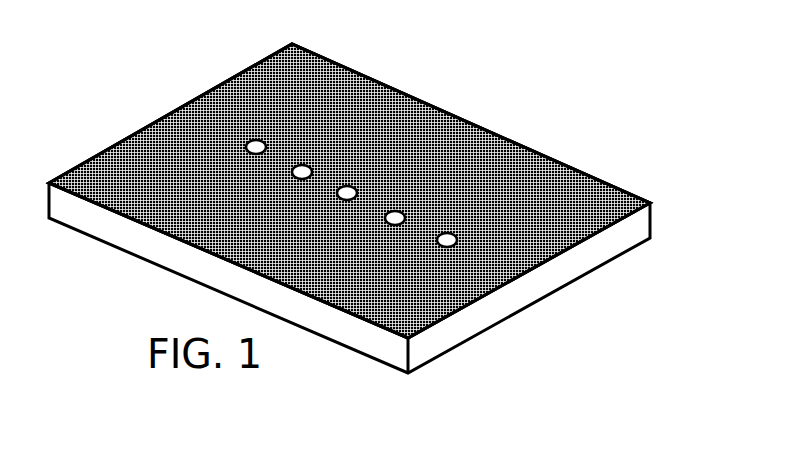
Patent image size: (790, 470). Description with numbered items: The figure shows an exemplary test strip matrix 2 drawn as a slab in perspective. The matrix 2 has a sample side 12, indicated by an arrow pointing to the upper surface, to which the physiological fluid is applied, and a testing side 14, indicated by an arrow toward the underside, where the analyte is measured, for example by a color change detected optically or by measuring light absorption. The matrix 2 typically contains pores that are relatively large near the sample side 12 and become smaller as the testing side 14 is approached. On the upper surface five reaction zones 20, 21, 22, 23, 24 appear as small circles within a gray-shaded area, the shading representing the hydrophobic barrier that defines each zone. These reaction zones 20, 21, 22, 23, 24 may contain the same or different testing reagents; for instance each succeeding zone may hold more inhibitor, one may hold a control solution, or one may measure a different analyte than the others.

The matrix 2 is at (540, 77).
The sample side 12 is at (235, 97).
The testing side 14 is at (585, 303).
The reaction zone 20 is at (258, 143).
The reaction zone 21 is at (304, 168).
The reaction zone 22 is at (349, 189).
The reaction zone 23 is at (397, 214).
The reaction zone 24 is at (450, 236).